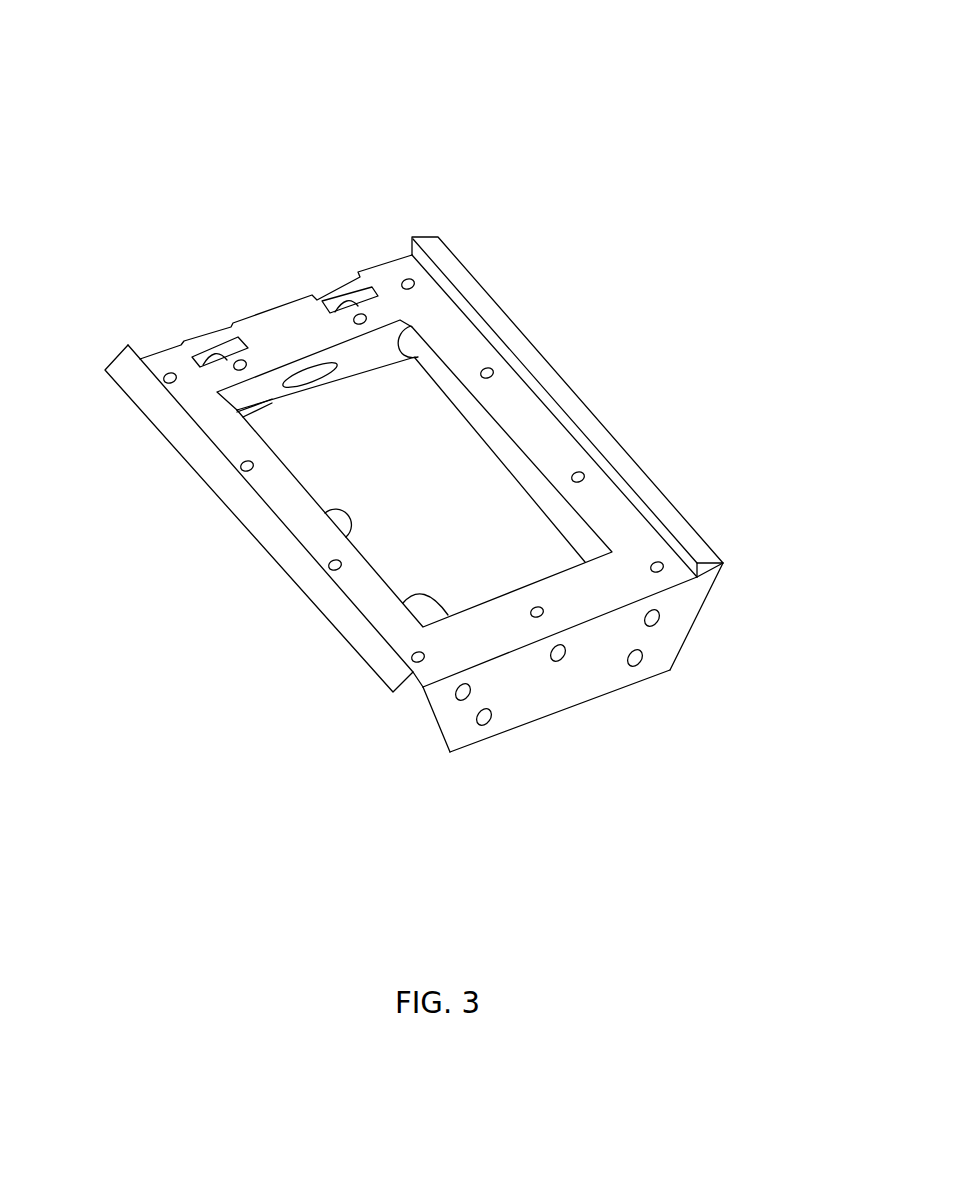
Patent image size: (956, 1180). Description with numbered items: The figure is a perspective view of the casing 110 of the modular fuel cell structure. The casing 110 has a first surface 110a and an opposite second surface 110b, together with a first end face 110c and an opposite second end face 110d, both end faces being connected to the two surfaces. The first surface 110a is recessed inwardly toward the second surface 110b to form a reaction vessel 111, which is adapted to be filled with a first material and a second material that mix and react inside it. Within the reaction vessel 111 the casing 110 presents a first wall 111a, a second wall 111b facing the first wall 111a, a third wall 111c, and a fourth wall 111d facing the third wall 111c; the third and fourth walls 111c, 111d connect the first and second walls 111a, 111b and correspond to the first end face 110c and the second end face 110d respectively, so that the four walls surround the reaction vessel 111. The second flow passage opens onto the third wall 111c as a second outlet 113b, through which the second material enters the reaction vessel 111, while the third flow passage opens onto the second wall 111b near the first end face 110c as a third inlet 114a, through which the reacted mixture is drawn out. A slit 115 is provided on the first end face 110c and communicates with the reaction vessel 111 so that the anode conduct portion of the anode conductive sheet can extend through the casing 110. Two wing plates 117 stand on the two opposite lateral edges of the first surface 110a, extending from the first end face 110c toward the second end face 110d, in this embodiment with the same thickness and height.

The casing 110 is at (143, 41).
The first surface 110a is at (658, 595).
The second surface 110b is at (582, 700).
The first end face 110c is at (242, 320).
The second end face 110d is at (515, 708).
The reaction vessel 111 is at (474, 566).
The first wall 111a is at (300, 563).
The second wall 111b is at (497, 443).
The third wall 111c is at (287, 259).
The fourth wall 111d is at (405, 608).
The second outlet 113b is at (308, 355).
The third inlet 114a is at (423, 347).
The slit 115 is at (237, 403).
The wing plates 117 is at (694, 546).